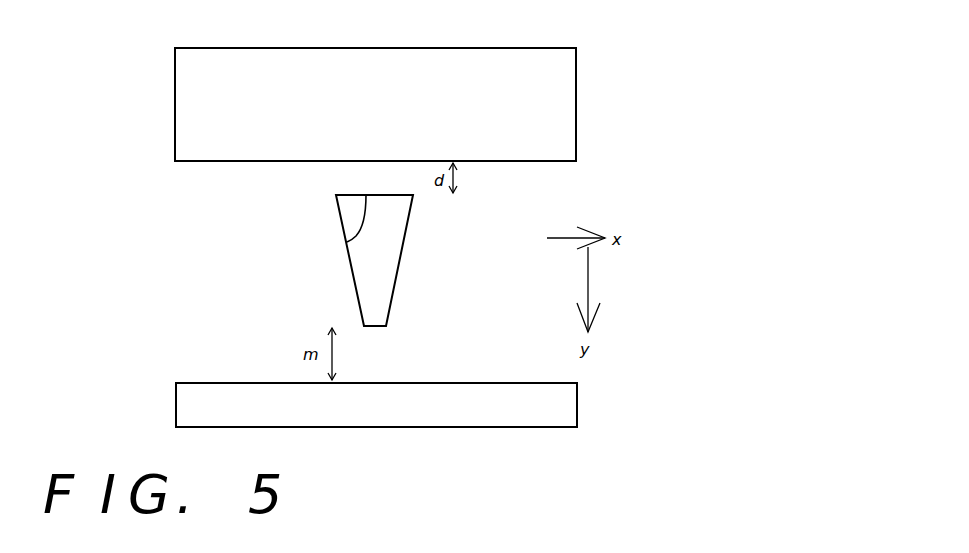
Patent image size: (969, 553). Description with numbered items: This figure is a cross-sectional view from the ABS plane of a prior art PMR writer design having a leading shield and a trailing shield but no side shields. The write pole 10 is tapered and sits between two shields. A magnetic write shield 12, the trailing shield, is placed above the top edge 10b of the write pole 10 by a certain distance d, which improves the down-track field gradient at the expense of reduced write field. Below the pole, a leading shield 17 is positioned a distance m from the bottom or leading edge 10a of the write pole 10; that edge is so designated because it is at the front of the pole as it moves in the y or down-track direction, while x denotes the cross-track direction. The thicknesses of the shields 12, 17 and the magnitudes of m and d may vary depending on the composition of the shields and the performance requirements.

The magnetic write shield 12 is at (560, 93).
The leading shield 17 is at (190, 400).
The write pole 10 is at (393, 257).
The bottom or leading edge 10a is at (375, 326).
The top edge 10b is at (348, 242).